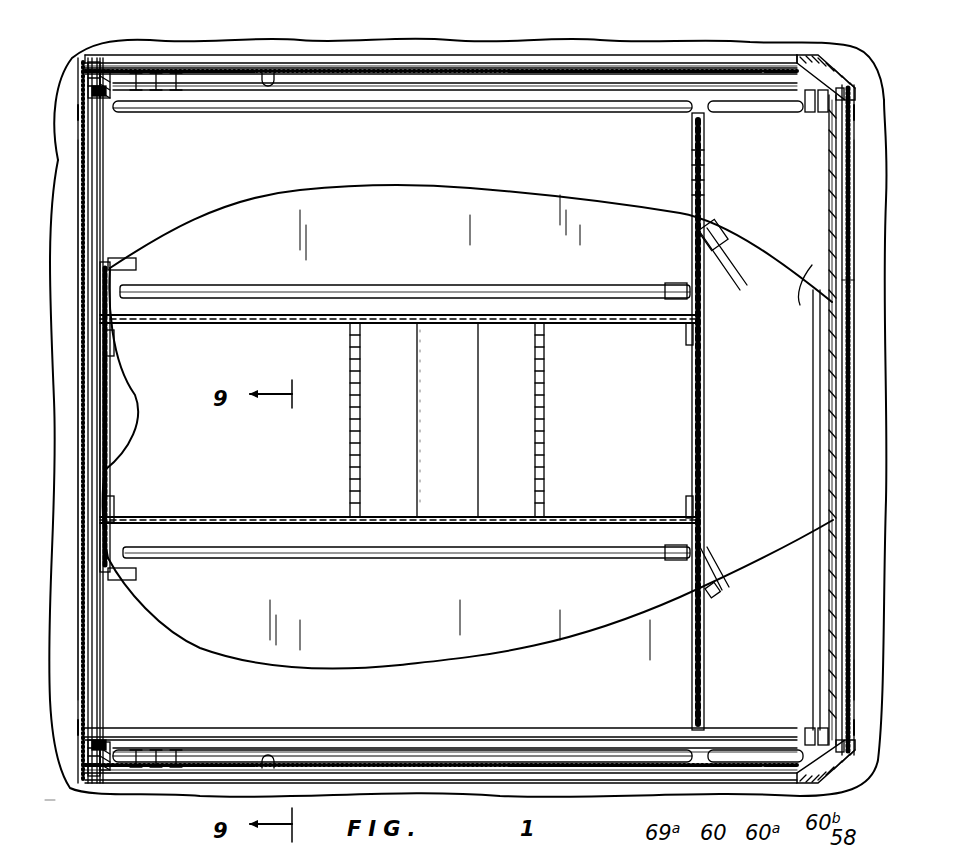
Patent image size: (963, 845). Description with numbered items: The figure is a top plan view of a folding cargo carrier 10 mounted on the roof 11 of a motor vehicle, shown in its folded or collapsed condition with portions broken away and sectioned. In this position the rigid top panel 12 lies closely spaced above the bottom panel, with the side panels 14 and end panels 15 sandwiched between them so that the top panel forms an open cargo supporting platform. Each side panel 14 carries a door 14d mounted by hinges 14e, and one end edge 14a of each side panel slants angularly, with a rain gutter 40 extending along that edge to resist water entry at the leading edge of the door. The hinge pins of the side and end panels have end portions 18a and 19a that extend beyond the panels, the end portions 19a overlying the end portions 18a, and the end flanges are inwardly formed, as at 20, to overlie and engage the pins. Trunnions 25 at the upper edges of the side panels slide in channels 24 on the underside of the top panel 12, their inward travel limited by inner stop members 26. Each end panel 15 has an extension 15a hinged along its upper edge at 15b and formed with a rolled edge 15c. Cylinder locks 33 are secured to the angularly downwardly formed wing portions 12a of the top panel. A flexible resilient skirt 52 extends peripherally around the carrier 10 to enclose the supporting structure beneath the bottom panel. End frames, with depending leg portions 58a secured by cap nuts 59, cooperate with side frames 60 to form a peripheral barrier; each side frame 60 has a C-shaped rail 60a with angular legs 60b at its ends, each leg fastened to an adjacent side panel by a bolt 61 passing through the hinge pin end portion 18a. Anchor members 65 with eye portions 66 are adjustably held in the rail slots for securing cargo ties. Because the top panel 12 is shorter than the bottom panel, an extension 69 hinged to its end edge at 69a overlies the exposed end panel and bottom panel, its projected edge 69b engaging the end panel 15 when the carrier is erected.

The folding cargo carrier 10 is at (92, 805).
The roof 11 is at (903, 690).
The top panel 12 is at (462, 164).
The wing portion 12a is at (488, 73).
The side panel 14 is at (505, 230).
The end edge 14a is at (712, 275).
The door 14d is at (350, 200).
The hinge 14e is at (182, 266).
The end panel 15 is at (186, 343).
The extension 15a is at (495, 440).
The hinged connection 15b is at (355, 447).
The rolled edge 15c is at (478, 482).
The end portion of hinge pin 18a is at (88, 100).
The end portion of hinge pin 19a is at (108, 77).
The inwardly formed flange portion 20 is at (829, 503).
The channel 24 is at (705, 472).
The trunnion 25 is at (108, 325).
The inner stop member 26 is at (112, 338).
The cylinder lock 33 is at (266, 80).
The rain gutter 40 is at (713, 237).
The skirt 52 is at (413, 72).
The leg portion 58a is at (88, 112).
The cap nut 59 is at (78, 85).
The side frame 60 is at (596, 74).
The rail 60a is at (533, 67).
The angular leg 60b is at (82, 78).
The bolt 61 is at (100, 92).
The anchor member 65 is at (196, 96).
The eye portion 66 is at (175, 92).
The extension 69 is at (805, 300).
The hinged connection 69a is at (695, 181).
The projected edge 69b is at (845, 282).